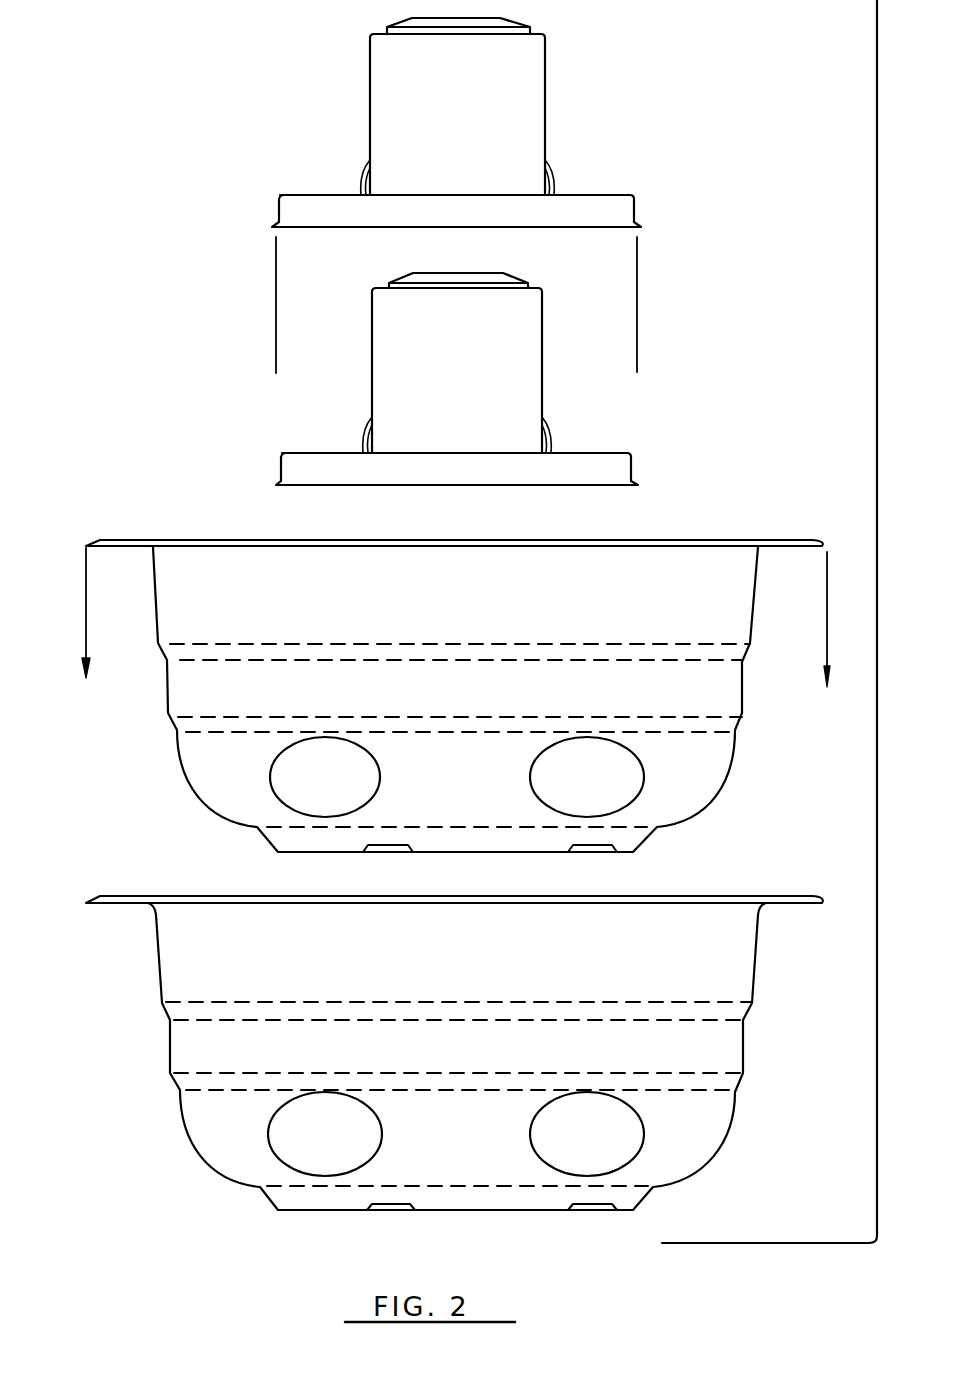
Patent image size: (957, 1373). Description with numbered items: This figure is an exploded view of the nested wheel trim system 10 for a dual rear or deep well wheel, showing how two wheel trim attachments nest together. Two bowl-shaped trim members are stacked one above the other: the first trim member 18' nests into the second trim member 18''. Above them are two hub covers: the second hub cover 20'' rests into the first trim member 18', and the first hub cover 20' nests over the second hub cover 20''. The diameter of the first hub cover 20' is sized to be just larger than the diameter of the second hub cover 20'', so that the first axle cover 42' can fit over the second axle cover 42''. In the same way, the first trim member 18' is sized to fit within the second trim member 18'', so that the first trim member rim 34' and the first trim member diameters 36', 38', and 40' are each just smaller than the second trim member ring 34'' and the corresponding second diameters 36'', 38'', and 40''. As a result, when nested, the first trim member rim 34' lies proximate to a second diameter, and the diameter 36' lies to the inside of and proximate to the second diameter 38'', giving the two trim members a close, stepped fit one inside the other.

The nested wheel trim system 10 is at (186, 490).
The first trim member 18' is at (455, 671).
The second trim member 18'' is at (457, 1033).
The first hub cover 20' is at (514, 100).
The second hub cover 20'' is at (501, 362).
The first trim member rim 34' is at (466, 513).
The second trim member ring 34'' is at (466, 878).
The first trim member diameter 36' is at (490, 638).
The second diameter 36'' is at (502, 1000).
The first trim member diameter 38' is at (506, 728).
The second diameter 38'' is at (511, 1086).
The first trim member diameter 40' is at (520, 830).
The second diameter 40'' is at (530, 1199).
The first axle cover 42' is at (465, 159).
The second axle cover 42'' is at (457, 427).